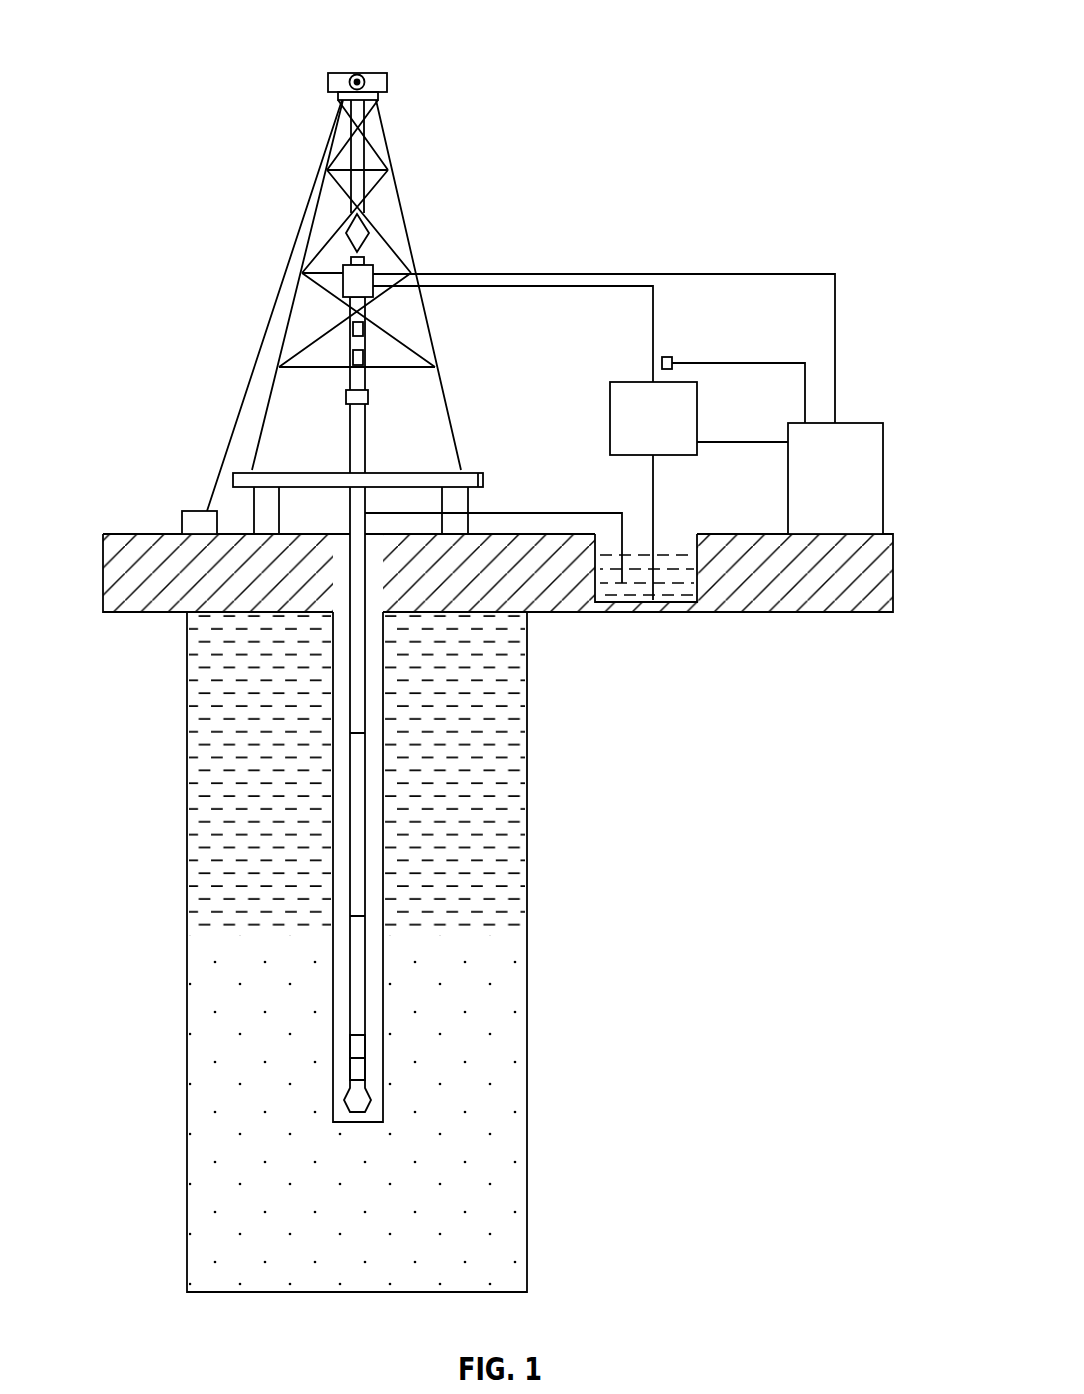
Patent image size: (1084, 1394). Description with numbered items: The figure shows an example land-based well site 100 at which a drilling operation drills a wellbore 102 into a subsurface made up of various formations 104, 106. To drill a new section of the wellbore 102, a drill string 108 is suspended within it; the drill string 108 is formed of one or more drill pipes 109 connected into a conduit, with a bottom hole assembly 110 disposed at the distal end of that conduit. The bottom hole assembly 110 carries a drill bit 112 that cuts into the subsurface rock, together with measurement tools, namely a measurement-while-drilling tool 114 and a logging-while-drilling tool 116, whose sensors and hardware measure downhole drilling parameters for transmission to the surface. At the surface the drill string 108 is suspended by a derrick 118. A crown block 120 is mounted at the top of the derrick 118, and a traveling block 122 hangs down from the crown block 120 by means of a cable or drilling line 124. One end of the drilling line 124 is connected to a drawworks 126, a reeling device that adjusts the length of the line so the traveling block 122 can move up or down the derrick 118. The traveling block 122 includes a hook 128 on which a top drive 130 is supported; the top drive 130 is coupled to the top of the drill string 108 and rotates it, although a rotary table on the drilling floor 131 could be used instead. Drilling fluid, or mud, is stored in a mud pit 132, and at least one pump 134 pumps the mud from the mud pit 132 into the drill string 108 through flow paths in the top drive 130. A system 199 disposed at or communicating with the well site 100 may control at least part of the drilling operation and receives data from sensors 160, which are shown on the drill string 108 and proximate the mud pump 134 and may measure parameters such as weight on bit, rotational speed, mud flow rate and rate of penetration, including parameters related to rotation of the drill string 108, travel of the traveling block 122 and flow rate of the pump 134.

The well site 100 is at (403, 107).
The wellbore 102 is at (373, 765).
The formation 104 is at (517, 675).
The formation 106 is at (517, 970).
The drill string 108 is at (332, 916).
The drill pipes 109 is at (356, 710).
The bottom hole assembly (BHA) 110 is at (347, 1043).
The drill bit 112 is at (370, 1102).
The measurement-while-drilling (MWD) tool 114 is at (358, 1040).
The logging-while-drilling (LWD) tool 116 is at (358, 1071).
The derrick 118 is at (393, 176).
The crown block 120 is at (358, 73).
The traveling block 122 is at (361, 231).
The drilling line 124 is at (367, 147).
The drawworks 126 is at (190, 511).
The hook 128 is at (349, 255).
The top drive 130 is at (343, 278).
The drilling floor 131 is at (390, 470).
The mud pit 132 is at (689, 547).
The pump 134 is at (700, 418).
The sensors 160 is at (363, 330).
The system 199 is at (862, 423).